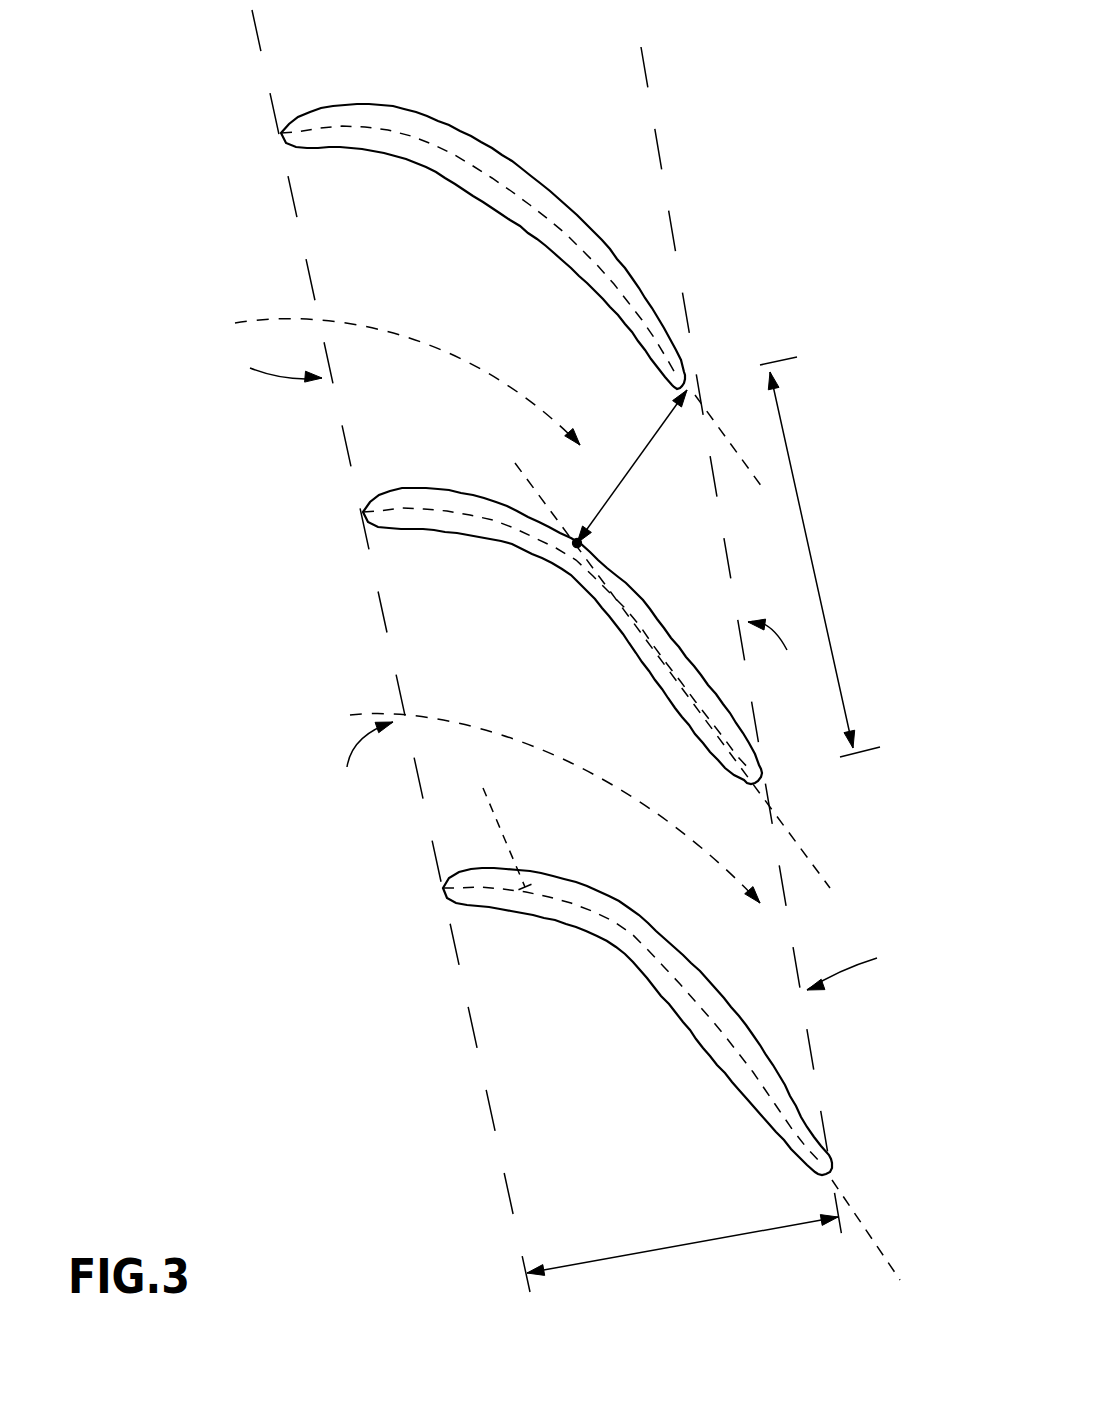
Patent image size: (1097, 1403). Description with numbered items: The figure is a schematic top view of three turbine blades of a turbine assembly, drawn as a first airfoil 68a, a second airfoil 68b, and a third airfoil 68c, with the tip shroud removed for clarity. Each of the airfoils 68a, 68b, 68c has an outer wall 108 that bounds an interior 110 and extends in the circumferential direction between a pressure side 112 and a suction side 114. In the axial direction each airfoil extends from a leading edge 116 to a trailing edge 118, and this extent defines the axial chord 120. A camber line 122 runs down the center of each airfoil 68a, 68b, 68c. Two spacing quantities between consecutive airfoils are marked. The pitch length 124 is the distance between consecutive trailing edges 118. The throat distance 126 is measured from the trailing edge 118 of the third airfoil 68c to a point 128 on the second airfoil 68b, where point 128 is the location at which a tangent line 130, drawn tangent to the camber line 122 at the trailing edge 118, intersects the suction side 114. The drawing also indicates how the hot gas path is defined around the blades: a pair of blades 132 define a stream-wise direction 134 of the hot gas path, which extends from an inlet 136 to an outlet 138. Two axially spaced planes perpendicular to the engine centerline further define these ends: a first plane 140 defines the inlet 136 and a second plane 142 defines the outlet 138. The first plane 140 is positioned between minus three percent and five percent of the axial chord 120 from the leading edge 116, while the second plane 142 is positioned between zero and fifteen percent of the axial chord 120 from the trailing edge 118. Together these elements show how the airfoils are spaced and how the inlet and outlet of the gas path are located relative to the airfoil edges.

The first airfoil 68a is at (543, 869).
The second airfoil 68b is at (408, 489).
The third airfoil 68c is at (395, 107).
The outer wall 108 is at (576, 219).
The interior 110 is at (462, 169).
The pressure side 112 is at (486, 207).
The suction side 114 is at (528, 175).
The leading edge 116 is at (280, 134).
The trailing edge 118 is at (690, 391).
The axial chord 120 is at (637, 1250).
The camber line 122 is at (488, 829).
The pitch length 124 is at (807, 530).
The throat distance 126 is at (640, 447).
The point 128 is at (583, 541).
The tangent line 130 is at (527, 468).
The blades 132 is at (282, 134).
The stream-wise direction 134 is at (449, 339).
The inlet 136 is at (263, 370).
The outlet 138 is at (832, 804).
The first plane 140 is at (487, 1102).
The second plane 142 is at (813, 1053).